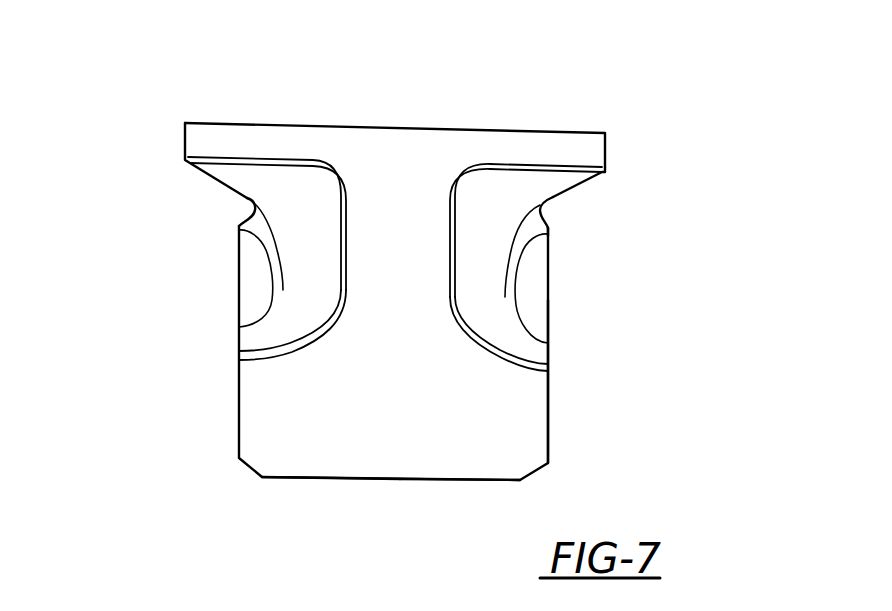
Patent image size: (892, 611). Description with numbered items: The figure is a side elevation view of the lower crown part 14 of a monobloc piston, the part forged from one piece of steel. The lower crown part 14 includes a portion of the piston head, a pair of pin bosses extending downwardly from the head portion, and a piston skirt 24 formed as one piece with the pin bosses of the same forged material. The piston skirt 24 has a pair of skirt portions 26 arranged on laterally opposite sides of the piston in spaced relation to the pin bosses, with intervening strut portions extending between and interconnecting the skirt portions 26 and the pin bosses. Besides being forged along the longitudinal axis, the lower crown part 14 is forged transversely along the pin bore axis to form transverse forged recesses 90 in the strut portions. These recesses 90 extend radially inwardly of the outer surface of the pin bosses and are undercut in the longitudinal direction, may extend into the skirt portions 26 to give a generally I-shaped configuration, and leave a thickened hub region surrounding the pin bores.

The lower crown part 14 is at (625, 132).
The piston skirt 24 is at (320, 477).
The skirt portions 26 is at (433, 460).
The transverse forged recesses 90 is at (553, 200).